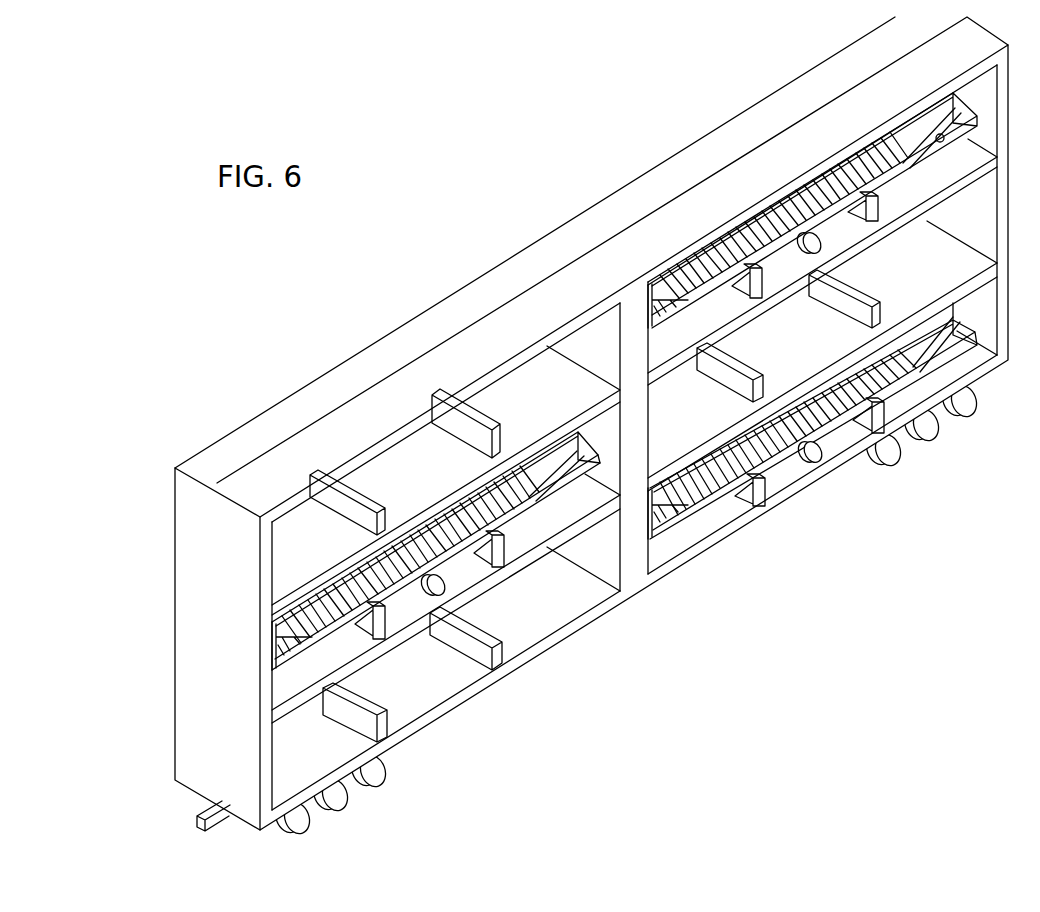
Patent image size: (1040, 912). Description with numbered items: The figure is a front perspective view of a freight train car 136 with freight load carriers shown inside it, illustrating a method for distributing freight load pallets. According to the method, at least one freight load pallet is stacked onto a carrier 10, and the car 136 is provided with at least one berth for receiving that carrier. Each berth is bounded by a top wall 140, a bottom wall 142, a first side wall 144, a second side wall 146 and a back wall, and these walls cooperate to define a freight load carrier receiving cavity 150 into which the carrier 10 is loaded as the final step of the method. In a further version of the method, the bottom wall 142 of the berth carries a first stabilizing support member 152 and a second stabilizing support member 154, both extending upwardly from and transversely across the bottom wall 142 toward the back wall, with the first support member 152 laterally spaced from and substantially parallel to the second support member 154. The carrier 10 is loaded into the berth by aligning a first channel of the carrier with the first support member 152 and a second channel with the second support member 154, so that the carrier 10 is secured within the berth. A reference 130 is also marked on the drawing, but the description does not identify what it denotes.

The carrier 10 is at (533, 509).
The storage rack body 130 is at (298, 553).
The freight train car 136 is at (460, 288).
The top wall 140 is at (392, 440).
The bottom wall 142 is at (411, 516).
The first side wall 144 is at (266, 576).
The second side wall 146 is at (618, 354).
The freight load carrier receiving cavity 150 is at (561, 370).
The first stabilizing support member 152 is at (355, 512).
The second stabilizing support member 154 is at (494, 431).